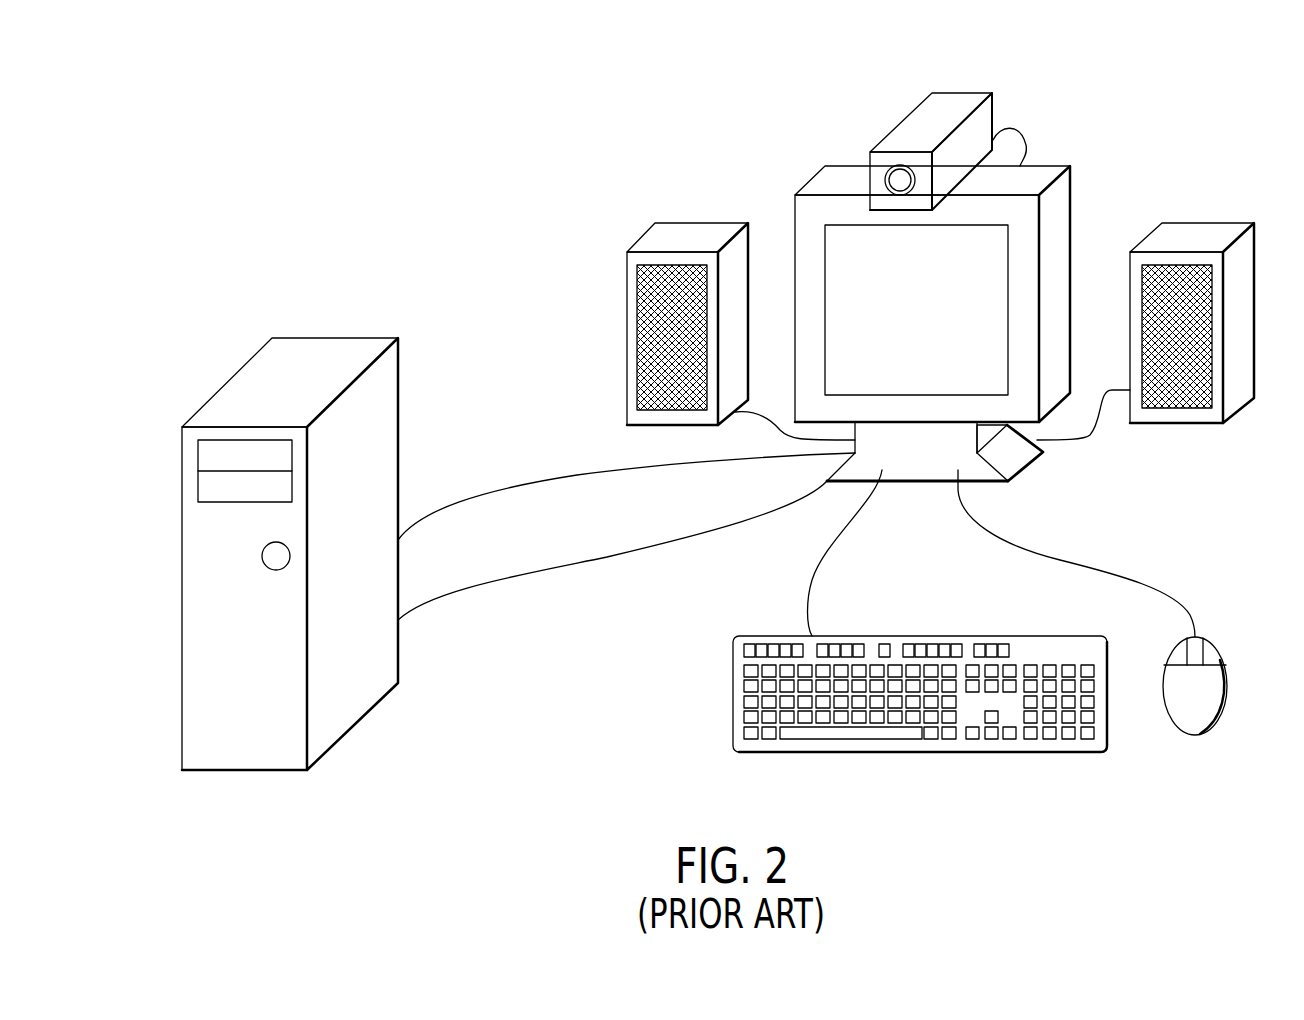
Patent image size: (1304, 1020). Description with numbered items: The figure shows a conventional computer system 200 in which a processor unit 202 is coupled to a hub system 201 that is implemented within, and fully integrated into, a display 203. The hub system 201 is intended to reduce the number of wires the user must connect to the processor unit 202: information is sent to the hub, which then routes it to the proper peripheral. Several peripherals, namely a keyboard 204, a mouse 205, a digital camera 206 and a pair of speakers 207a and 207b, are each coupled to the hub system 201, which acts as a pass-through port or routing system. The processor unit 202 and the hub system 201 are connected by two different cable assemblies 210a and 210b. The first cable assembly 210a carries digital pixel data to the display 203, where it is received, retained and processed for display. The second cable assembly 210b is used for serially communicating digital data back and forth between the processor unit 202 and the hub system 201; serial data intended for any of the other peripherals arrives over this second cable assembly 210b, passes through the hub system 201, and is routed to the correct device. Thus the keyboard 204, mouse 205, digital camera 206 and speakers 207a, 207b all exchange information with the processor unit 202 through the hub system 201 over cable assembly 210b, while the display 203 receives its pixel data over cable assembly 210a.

The computer system 200 is at (352, 78).
The hub system 201 is at (918, 482).
The processor unit 202 is at (245, 393).
The display 203 is at (1060, 199).
The keyboard 204 is at (739, 705).
The mouse 205 is at (1208, 695).
The digital camera 206 is at (950, 105).
The speaker 207a is at (1208, 235).
The speaker 207b is at (683, 238).
The first cable assembly 210a is at (573, 477).
The second cable assembly 210b is at (608, 557).